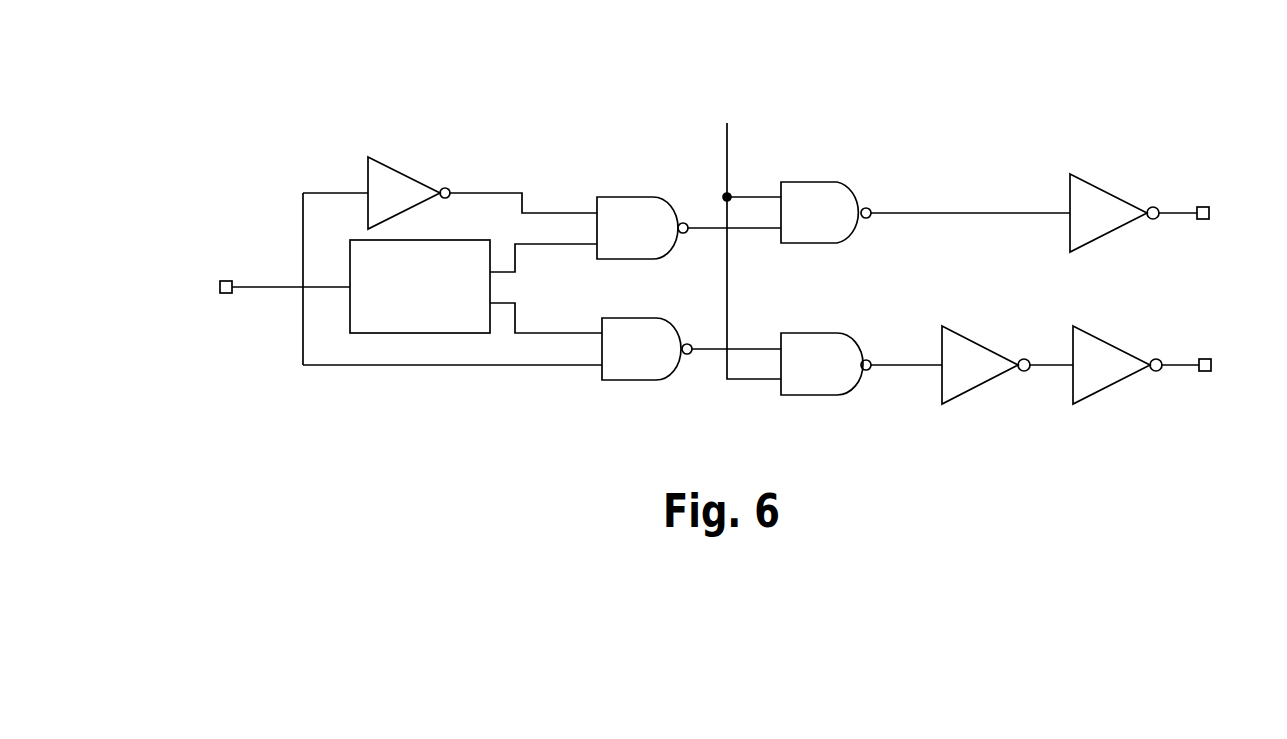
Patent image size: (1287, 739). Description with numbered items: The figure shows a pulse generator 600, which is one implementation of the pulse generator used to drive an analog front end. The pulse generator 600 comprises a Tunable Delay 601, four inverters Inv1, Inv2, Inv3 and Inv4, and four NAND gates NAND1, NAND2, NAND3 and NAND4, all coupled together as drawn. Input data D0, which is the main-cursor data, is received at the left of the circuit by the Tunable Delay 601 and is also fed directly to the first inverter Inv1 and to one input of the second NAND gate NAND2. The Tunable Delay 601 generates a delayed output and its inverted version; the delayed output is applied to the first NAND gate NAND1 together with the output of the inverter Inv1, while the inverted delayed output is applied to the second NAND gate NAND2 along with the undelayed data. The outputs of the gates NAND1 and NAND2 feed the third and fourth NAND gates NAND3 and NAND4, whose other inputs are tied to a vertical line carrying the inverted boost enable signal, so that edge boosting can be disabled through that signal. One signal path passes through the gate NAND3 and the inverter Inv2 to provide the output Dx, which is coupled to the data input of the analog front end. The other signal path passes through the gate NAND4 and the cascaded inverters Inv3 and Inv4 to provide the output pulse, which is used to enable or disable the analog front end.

The pulse generator 600 is at (700, 51).
The Tunable Delay 601 is at (406, 318).
The input data D0 is at (285, 275).
The inverter Inv1 is at (409, 193).
The inverter Inv2 is at (1114, 213).
The inverter Inv3 is at (986, 365).
The inverter Inv4 is at (1117, 365).
The NAND gate NAND1 is at (642, 239).
The NAND gate NAND2 is at (647, 360).
The NAND gate NAND3 is at (826, 224).
The NAND gate NAND4 is at (826, 376).
The output Dx is at (1184, 202).
The output pulse is at (1199, 353).